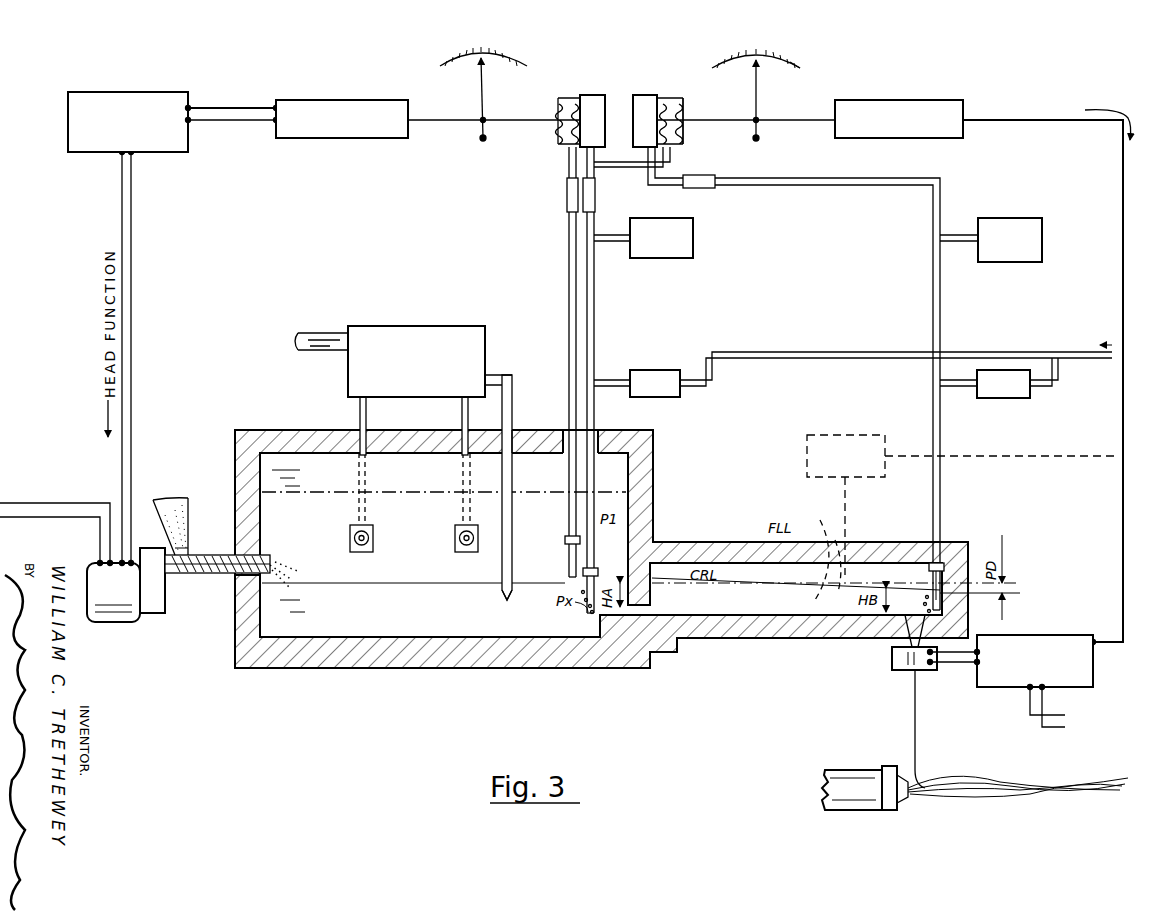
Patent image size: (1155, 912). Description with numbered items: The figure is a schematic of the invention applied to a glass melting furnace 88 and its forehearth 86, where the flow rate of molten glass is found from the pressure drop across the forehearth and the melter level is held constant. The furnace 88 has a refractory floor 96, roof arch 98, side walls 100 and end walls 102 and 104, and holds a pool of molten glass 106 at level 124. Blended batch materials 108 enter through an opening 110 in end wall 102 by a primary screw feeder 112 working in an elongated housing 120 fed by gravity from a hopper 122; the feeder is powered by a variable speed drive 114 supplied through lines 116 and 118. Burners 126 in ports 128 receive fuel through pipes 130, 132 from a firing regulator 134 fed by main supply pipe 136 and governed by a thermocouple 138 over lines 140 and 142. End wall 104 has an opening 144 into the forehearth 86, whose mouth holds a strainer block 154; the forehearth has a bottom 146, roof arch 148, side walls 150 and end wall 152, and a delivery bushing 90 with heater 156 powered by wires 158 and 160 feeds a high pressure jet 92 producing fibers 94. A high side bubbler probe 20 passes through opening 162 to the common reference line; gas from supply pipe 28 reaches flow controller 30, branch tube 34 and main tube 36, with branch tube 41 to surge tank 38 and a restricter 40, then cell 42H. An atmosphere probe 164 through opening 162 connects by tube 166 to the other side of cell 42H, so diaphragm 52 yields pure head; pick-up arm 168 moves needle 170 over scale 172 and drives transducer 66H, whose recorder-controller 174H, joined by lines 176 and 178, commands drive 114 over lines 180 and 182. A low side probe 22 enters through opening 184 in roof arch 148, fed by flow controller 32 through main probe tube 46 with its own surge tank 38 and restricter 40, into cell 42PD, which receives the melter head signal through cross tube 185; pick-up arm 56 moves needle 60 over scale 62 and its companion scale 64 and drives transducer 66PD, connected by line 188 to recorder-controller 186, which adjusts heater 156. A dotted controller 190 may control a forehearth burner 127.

The recorder-controller 174H is at (172, 92).
The line 176 is at (230, 108).
The line 178 is at (222, 124).
The transducer 66H is at (357, 100).
The melting furnace head scale 172 is at (440, 62).
The head indicator needle 170 is at (480, 82).
The signal pick-up arm 168 is at (530, 120).
The differential pressure detector cell 42H is at (566, 97).
The movable diaphragm 52 is at (582, 95).
The differential pressure detector cell 42PD is at (636, 97).
The pressure drop signal pick-up arm 56 is at (692, 120).
The indicator needle 60 is at (758, 102).
The pressure drop scale 62 is at (772, 54).
The flow rate scale 64 is at (790, 66).
The transducer 66PD is at (942, 100).
The line 188 is at (1122, 608).
The line 180 is at (122, 230).
The line 182 is at (132, 222).
The cross tube 185 is at (600, 170).
The restricter 40 is at (596, 200).
The surge tank 38 is at (676, 248).
The branch tube 41 is at (612, 242).
The tube 166 is at (569, 240).
The main probe tube 46 is at (938, 290).
The main supply pipe 136 is at (290, 342).
The firing regulator 134 is at (430, 372).
The pipe 130 is at (360, 414).
The pipe 132 is at (462, 414).
The branch tube 34 is at (598, 378).
The supply pipe 28 is at (698, 378).
The constant volumetric flow controller 30 is at (655, 383).
The main tube 36 is at (594, 408).
The constant volume flow controller 32 is at (1016, 394).
The controller 190 is at (808, 434).
The opening 162 is at (567, 430).
The glass melting furnace 88 is at (238, 428).
The refractory roof arch 98 is at (290, 434).
The hopper 122 is at (198, 500).
The primary screw feeder 112 is at (222, 530).
The power line 116 is at (56, 525).
The power line 118 is at (51, 537).
The variable speed drive 114 is at (113, 592).
The elongated housing 120 is at (224, 576).
The opening 110 is at (230, 582).
The refractory end wall 102 is at (235, 612).
The blended batch materials 108 is at (283, 578).
The refractory side walls 100 is at (330, 524).
The ports 128 is at (372, 528).
The burners 126 is at (374, 536).
The glass level 124 is at (444, 538).
The pool of molten glass 106 is at (372, 610).
The line 142 is at (490, 558).
The line 140 is at (515, 514).
The atmosphere sensing probe 164 is at (566, 540).
The thermocouple 138 is at (507, 600).
The refractory end wall 104 is at (655, 494).
The refractory roof arch 148 is at (725, 545).
The burner 127 is at (834, 540).
The opening 184 is at (940, 560).
The low side bubbler probe 22 is at (940, 572).
The refractory end wall 152 is at (970, 548).
The refractory side walls 150 is at (836, 579).
The refractory bottom 146 is at (812, 633).
The forehearth 86 is at (792, 650).
The opening 144 is at (636, 608).
The strainer block 154 is at (655, 612).
The high side bubbler probe 20 is at (592, 620).
The refractory floor 96 is at (362, 668).
The heater 156 is at (892, 660).
The delivery bushing 90 is at (912, 678).
The recorder-controller 186 is at (1096, 635).
The wire 160 is at (1070, 705).
The wire 158 is at (1076, 716).
The high pressure jet 92 is at (878, 768).
The fibers 94 is at (1005, 790).